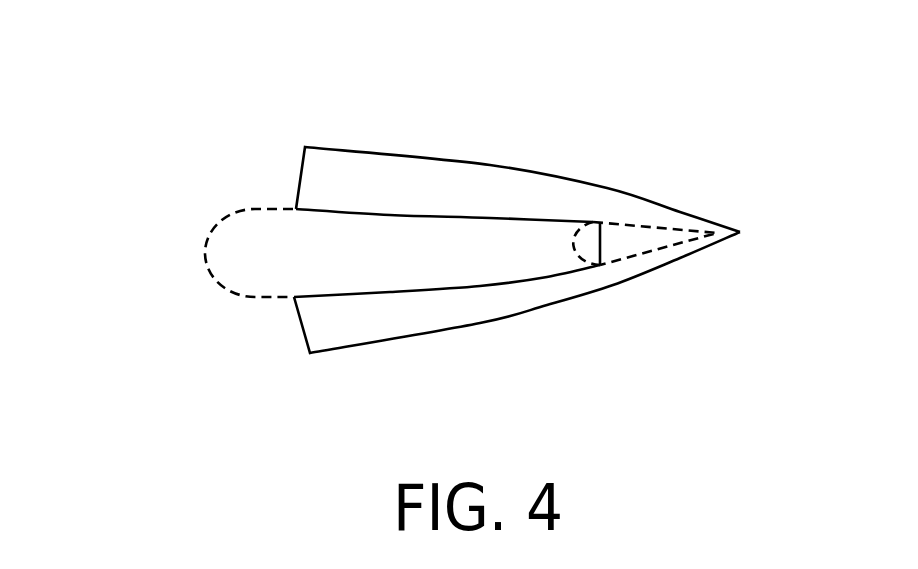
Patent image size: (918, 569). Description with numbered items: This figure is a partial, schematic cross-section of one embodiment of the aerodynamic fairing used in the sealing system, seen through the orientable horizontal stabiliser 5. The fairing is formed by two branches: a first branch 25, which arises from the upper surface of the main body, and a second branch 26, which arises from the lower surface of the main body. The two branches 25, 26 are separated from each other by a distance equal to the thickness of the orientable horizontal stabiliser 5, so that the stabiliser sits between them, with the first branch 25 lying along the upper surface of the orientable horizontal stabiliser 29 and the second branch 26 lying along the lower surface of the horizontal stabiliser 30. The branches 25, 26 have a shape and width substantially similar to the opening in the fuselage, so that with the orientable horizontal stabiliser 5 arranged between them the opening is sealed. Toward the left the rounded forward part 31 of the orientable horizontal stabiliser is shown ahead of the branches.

The first branch of the aerodynamic fairing 25 is at (350, 178).
The second branch of the aerodynamic fairing 26 is at (340, 322).
The upper surface of the orientable horizontal stabiliser 29 is at (485, 220).
The lower surface of the horizontal stabiliser 30 is at (447, 292).
The forward part of the orientable horizontal stabiliser 31 is at (205, 253).
The orientable horizontal stabiliser 5 is at (265, 245).